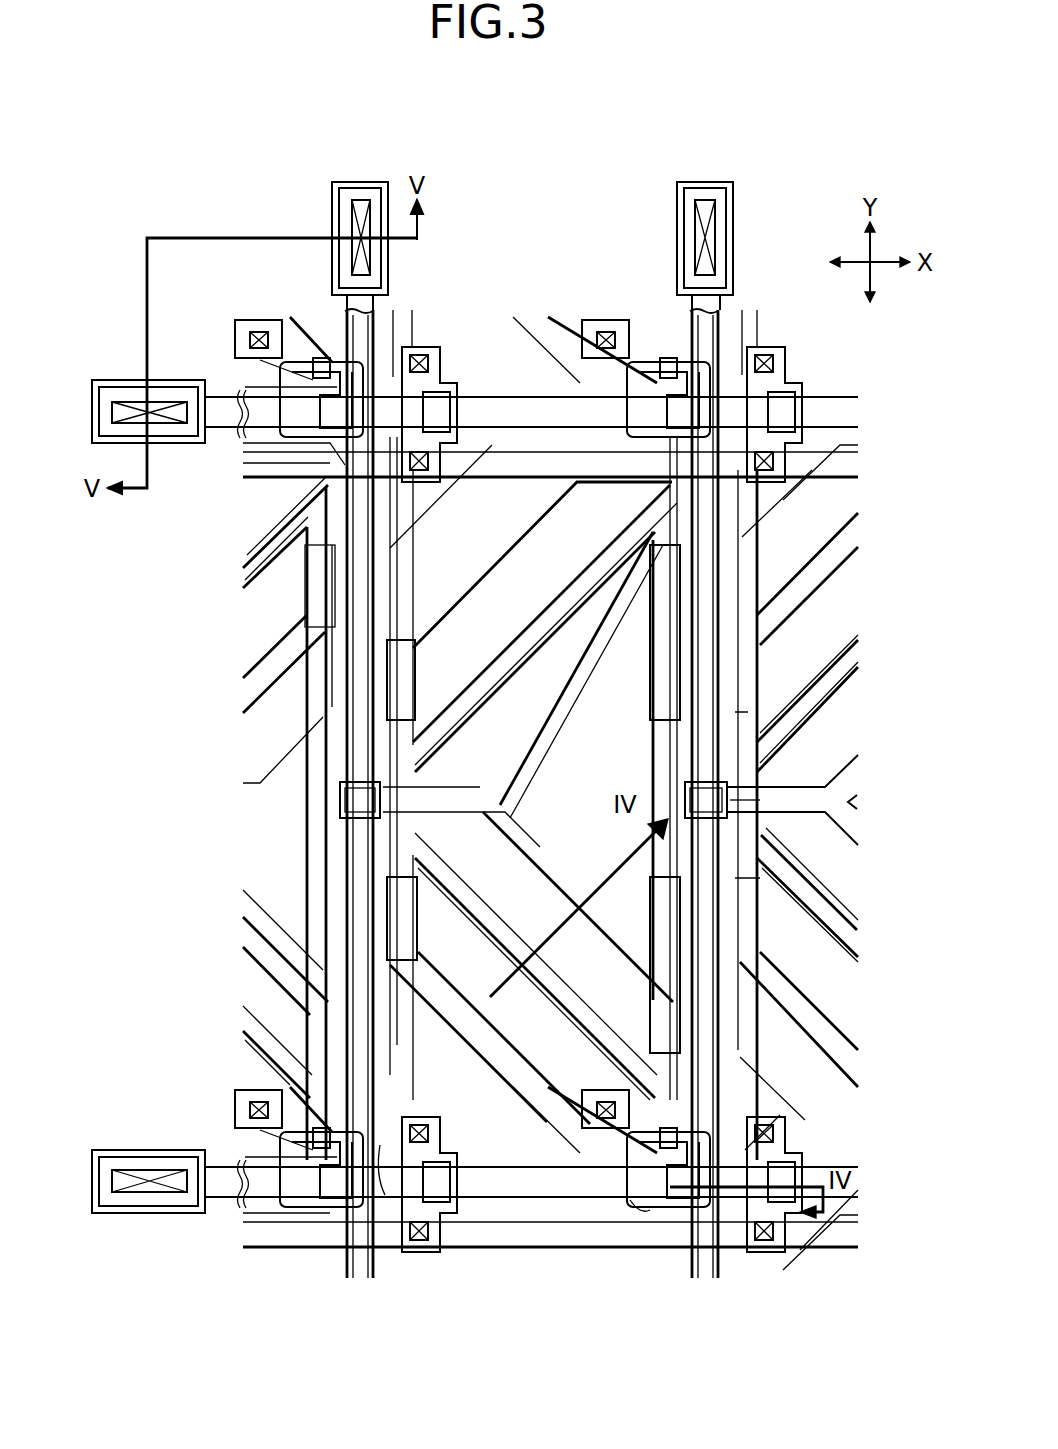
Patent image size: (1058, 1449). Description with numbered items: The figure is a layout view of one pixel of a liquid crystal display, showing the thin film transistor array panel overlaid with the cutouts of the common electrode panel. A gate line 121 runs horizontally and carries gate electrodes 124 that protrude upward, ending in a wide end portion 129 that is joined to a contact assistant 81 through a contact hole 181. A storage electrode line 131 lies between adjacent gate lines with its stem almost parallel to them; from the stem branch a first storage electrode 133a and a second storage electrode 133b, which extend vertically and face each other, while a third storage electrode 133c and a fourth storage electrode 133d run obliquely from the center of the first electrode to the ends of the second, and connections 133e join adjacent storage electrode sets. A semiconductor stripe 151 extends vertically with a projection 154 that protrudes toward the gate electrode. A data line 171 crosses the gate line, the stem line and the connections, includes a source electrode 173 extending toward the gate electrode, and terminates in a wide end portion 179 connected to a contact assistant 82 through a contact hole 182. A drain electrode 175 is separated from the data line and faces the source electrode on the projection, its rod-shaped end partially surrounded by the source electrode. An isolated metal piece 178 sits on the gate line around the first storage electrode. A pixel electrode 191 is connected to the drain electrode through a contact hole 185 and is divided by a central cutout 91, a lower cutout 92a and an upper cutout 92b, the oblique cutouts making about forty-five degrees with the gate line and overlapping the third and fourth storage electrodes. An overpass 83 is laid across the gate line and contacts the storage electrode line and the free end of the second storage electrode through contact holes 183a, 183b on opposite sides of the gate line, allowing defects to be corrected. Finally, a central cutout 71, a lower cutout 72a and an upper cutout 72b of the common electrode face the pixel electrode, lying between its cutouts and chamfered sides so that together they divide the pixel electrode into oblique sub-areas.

The central cutout 71 is at (505, 778).
The lower cutout 72a is at (455, 993).
The upper cutout 72b is at (485, 565).
The contact assistant 81 is at (92, 397).
The contact assistant 82 is at (332, 268).
The overpass 83 is at (437, 363).
The central cutout 91 is at (780, 757).
The lower cutout 92a is at (660, 978).
The upper cutout 92b is at (387, 685).
The gate line 121 is at (586, 396).
The gate electrode 124 is at (633, 1195).
The end portion 129 is at (95, 428).
The storage electrode line 131 is at (498, 453).
The first storage electrode 133a is at (386, 565).
The second storage electrode 133b is at (630, 753).
The third storage electrode 133c is at (553, 628).
The fourth storage electrode 133d is at (463, 903).
The connection 133e is at (760, 808).
The semiconductor stripe 151 is at (325, 737).
The projection 154 is at (592, 1225).
The data line 171 is at (346, 848).
The source electrode 173 is at (682, 1205).
The drain electrode 175 is at (598, 1203).
The isolated metal piece 178 is at (420, 1176).
The end portion 179 is at (360, 224).
The contact hole 181 is at (132, 403).
The contact hole 182 is at (375, 268).
The contact hole 183a is at (423, 1245).
The contact hole 183b is at (423, 1127).
The contact hole 185 is at (582, 1110).
The pixel electrode 191 is at (528, 1150).